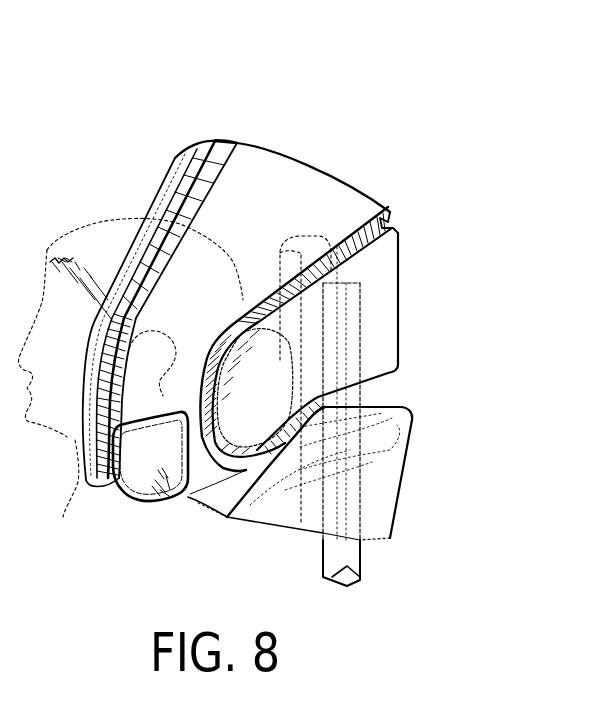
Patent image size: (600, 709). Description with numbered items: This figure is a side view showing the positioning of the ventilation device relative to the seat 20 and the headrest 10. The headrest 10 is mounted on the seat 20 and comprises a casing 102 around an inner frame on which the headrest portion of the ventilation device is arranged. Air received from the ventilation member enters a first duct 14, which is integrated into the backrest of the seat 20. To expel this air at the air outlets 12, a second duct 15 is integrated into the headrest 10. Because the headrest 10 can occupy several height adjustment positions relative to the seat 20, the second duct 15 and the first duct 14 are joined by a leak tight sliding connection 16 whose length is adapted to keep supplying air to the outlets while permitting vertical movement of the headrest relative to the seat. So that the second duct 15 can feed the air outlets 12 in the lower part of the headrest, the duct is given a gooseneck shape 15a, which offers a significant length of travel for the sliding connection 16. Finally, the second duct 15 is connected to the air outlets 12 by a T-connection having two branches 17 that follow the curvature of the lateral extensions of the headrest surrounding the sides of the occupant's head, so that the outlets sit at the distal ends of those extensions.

The headrest 10 is at (279, 112).
The casing 102 is at (228, 215).
The second duct 15 is at (396, 243).
The gooseneck shape 15a is at (318, 235).
The leak tight sliding connection 16 is at (350, 350).
The seat 20 is at (373, 496).
The first duct 14 is at (357, 553).
The air outlets 12 is at (133, 500).
The branches 17 is at (168, 500).